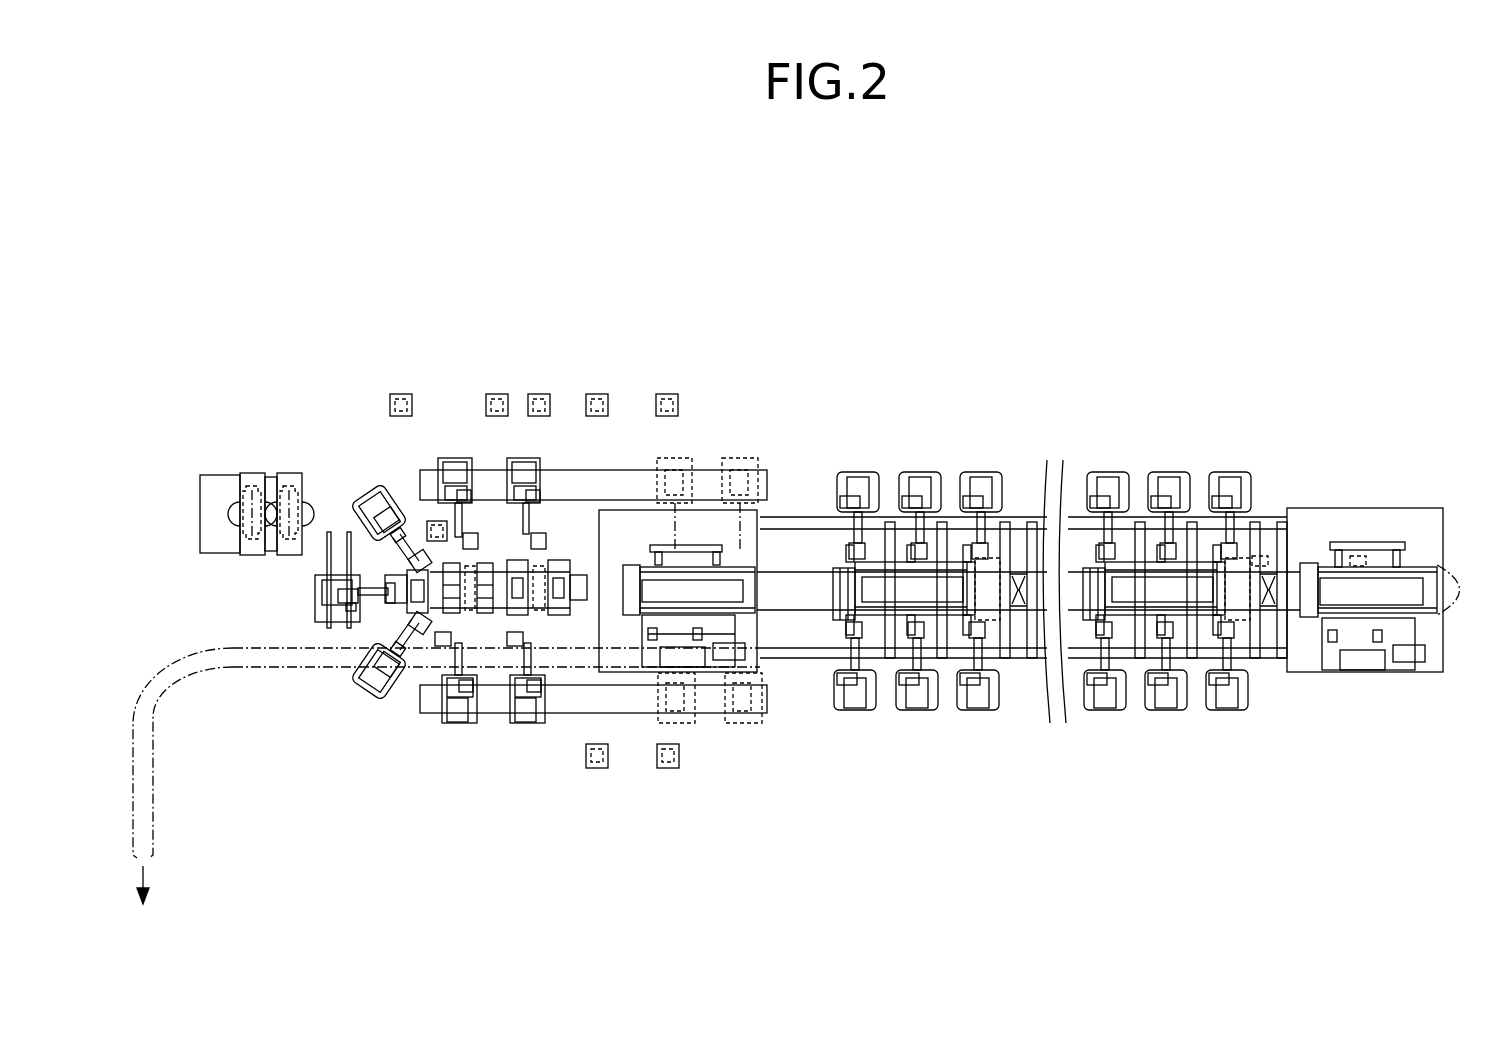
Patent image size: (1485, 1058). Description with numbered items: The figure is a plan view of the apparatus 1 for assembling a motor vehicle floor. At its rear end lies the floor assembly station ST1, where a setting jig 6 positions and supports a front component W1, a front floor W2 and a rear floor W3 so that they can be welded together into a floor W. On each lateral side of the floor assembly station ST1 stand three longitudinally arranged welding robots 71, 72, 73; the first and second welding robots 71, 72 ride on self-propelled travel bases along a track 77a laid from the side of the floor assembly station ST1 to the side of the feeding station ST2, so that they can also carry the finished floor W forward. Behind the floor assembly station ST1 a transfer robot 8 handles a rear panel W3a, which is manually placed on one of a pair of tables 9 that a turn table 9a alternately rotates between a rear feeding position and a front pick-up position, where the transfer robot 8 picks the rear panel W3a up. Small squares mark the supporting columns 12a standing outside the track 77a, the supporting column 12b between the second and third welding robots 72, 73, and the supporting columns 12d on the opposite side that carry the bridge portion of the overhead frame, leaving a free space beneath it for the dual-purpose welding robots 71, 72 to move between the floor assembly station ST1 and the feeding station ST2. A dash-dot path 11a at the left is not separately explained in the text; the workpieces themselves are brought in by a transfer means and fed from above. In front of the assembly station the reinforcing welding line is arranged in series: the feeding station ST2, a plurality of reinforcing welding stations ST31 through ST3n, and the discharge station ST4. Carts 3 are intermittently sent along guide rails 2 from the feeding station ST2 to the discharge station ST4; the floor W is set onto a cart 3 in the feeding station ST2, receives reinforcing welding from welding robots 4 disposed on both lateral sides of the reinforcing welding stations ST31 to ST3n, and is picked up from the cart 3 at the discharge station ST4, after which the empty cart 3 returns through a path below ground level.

The apparatus for assembling a floor 1 is at (835, 412).
The guide rails 2 is at (784, 516).
The cart 3 is at (712, 583).
The welding robot 4 is at (862, 475).
The setting jig 6 is at (547, 635).
The first welding robot 71 is at (778, 817).
The second welding robot 72 is at (723, 800).
The third welding robot 73 is at (340, 767).
The track 77a is at (621, 478).
The transfer robot 8 is at (334, 602).
The table 9 is at (274, 473).
The turn table 9a is at (208, 475).
The conveyor path 11a is at (247, 667).
The supporting columns 12a is at (399, 394).
The supporting column 12b is at (430, 521).
The supporting columns 12d is at (596, 768).
The floor W is at (488, 632).
The front component W1 is at (566, 560).
The front floor W2 is at (482, 562).
The rear floor W3 is at (417, 568).
The rear panel W3a is at (235, 488).
The floor assembly station ST1 is at (473, 315).
The feeding station ST2 is at (683, 312).
The reinforcing welding station ST31 is at (907, 312).
The reinforcing welding station ST3n is at (1150, 312).
The discharge station ST4 is at (1350, 312).